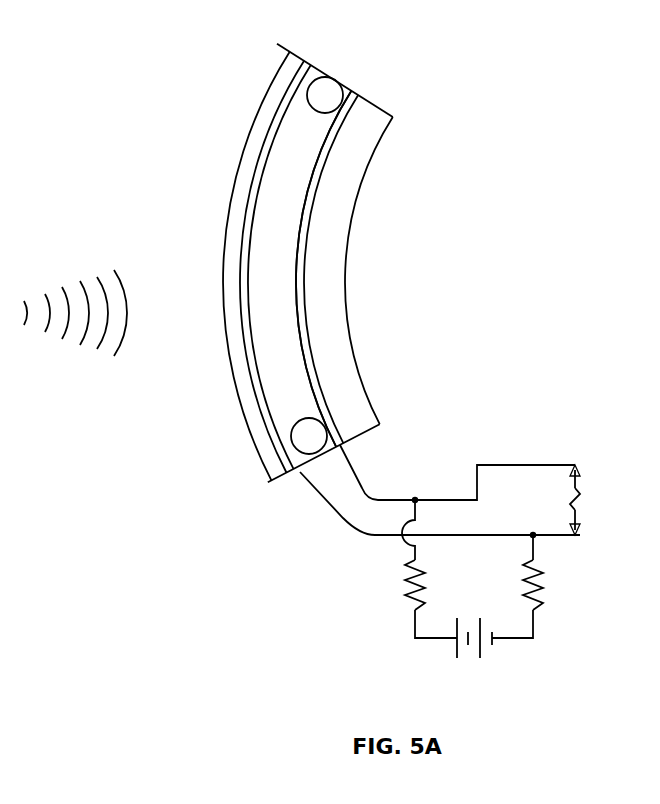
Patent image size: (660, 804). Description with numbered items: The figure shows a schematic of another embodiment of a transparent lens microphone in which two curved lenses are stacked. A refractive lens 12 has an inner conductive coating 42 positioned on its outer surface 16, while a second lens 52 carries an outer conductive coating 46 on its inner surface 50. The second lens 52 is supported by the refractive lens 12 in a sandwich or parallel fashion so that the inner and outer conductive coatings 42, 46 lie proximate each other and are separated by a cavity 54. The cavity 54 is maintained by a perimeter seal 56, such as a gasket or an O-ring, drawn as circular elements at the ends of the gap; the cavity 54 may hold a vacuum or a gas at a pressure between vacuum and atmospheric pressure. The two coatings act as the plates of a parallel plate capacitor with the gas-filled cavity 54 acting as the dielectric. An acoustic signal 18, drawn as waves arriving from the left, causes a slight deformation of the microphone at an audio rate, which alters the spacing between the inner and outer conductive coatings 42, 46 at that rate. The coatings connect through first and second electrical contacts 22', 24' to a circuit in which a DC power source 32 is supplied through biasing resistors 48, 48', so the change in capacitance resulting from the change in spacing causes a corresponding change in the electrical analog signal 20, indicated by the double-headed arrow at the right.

The refractive lens 12 is at (330, 223).
The outer surface 16 is at (304, 277).
The acoustic signal 18 is at (124, 340).
The electrical analog signal 20 is at (577, 492).
The first electrical contact 22' is at (457, 472).
The second electrical contact 24' is at (405, 503).
The DC power source 32 is at (455, 650).
The inner conductive coating 42 is at (317, 378).
The outer conductive coating 46 is at (262, 396).
The biasing resistor 48 is at (399, 569).
The biasing resistor 48' is at (552, 586).
The inner surface 50 is at (246, 232).
The second lens 52 is at (238, 203).
The cavity 54 is at (300, 165).
The perimeter seal 56 is at (326, 94).